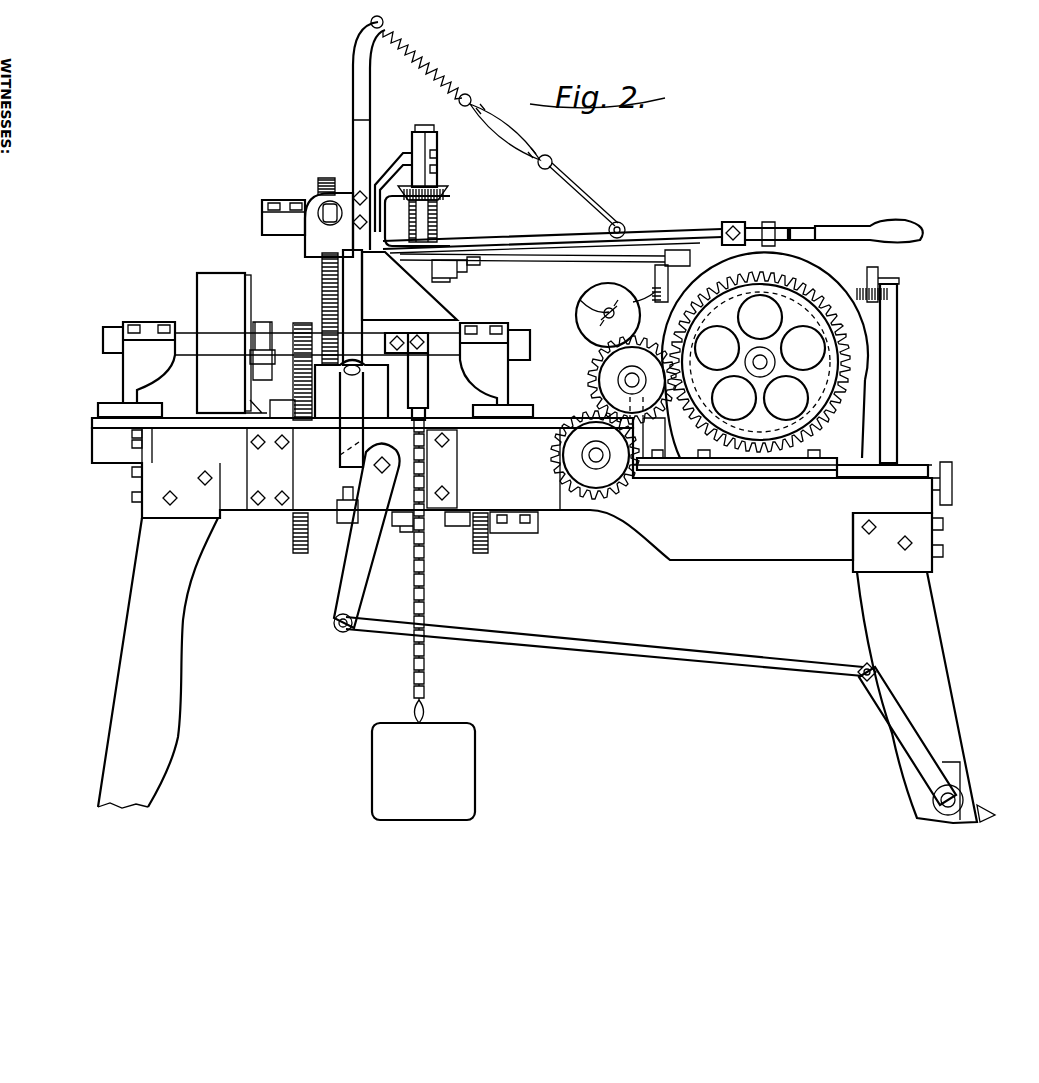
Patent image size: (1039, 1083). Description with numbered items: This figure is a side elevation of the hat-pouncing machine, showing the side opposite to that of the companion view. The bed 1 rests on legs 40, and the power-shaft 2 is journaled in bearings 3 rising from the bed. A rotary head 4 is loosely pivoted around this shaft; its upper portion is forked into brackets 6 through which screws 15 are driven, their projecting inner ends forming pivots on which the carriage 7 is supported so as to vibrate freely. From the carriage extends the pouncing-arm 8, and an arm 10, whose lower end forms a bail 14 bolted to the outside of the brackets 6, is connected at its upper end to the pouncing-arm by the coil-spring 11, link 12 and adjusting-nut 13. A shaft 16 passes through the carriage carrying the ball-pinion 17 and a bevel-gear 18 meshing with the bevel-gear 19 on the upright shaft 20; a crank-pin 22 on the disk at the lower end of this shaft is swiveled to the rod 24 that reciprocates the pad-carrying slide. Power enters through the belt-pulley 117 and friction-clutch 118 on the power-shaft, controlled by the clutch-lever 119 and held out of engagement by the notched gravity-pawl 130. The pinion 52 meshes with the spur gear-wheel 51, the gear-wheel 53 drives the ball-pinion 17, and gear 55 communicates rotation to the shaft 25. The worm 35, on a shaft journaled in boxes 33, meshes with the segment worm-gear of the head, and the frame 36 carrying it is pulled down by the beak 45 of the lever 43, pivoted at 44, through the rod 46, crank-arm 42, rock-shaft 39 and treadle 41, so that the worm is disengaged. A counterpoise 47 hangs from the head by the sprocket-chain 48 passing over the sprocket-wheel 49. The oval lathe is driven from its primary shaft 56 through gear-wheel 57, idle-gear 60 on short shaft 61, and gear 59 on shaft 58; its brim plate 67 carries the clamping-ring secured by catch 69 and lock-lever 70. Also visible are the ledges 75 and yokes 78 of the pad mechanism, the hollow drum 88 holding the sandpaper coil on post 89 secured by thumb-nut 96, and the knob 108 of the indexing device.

The bed 1 is at (75, 432).
The power-shaft 2 is at (280, 335).
The bearings 3 is at (146, 322).
The rotary head 4 is at (409, 286).
The brackets 6 is at (329, 225).
The carriage 7 is at (403, 157).
The pouncing-arm 8 is at (546, 240).
The arm 10 is at (347, 133).
The coil-spring 11 is at (447, 63).
The link 12 is at (580, 193).
The adjusting-nut 13 is at (505, 116).
The bail 14 is at (353, 143).
The screws 15 is at (318, 208).
The shaft 16 is at (262, 215).
The ball-pinion 17 is at (320, 178).
The bevel-gear 18 is at (435, 236).
The bevel-gear 19 is at (447, 195).
The upright shaft 20 is at (419, 128).
The crank-pin 22 is at (447, 280).
The rod 24 is at (545, 266).
The shaft 25 is at (447, 526).
The boxes 33 is at (353, 365).
The worm 35 is at (375, 408).
The frame 36 is at (351, 419).
The rock-shaft 39 is at (935, 796).
The legs 40 is at (917, 697).
The treadle 41 is at (977, 807).
The crank-arm 42 is at (858, 698).
The lever 43 is at (342, 577).
The pivot 44 is at (374, 470).
The beak 45 is at (376, 455).
The rod 46 is at (550, 636).
The counterpoise 47 is at (423, 771).
The sprocket-chain 48 is at (427, 592).
The sprocket-wheel 49 is at (440, 492).
The spur gear-wheel 51 is at (294, 376).
The pinion 52 is at (303, 335).
The gear-wheel 53 is at (322, 286).
The gear 55 is at (490, 540).
The primary shaft of the oval lathe 56 is at (777, 362).
The gear-wheel 57 is at (850, 365).
The shaft 58 is at (592, 460).
The gear 59 is at (555, 450).
The idle-gear 60 is at (590, 381).
The short shaft 61 is at (628, 378).
The metal plate 67 is at (805, 240).
The catch 69 is at (765, 224).
The lock-lever 70 is at (800, 228).
The ledges 75 is at (652, 292).
The yokes 78 is at (655, 272).
The hollow drum 88 is at (608, 305).
The post 89 is at (604, 313).
The thumb-nut 96 is at (592, 300).
The knob 108 is at (945, 462).
The belt-pulley 117 is at (220, 343).
The friction-clutch 118 is at (250, 292).
The clutch-lever 119 is at (250, 412).
The notched gravity-pawl 130 is at (280, 410).